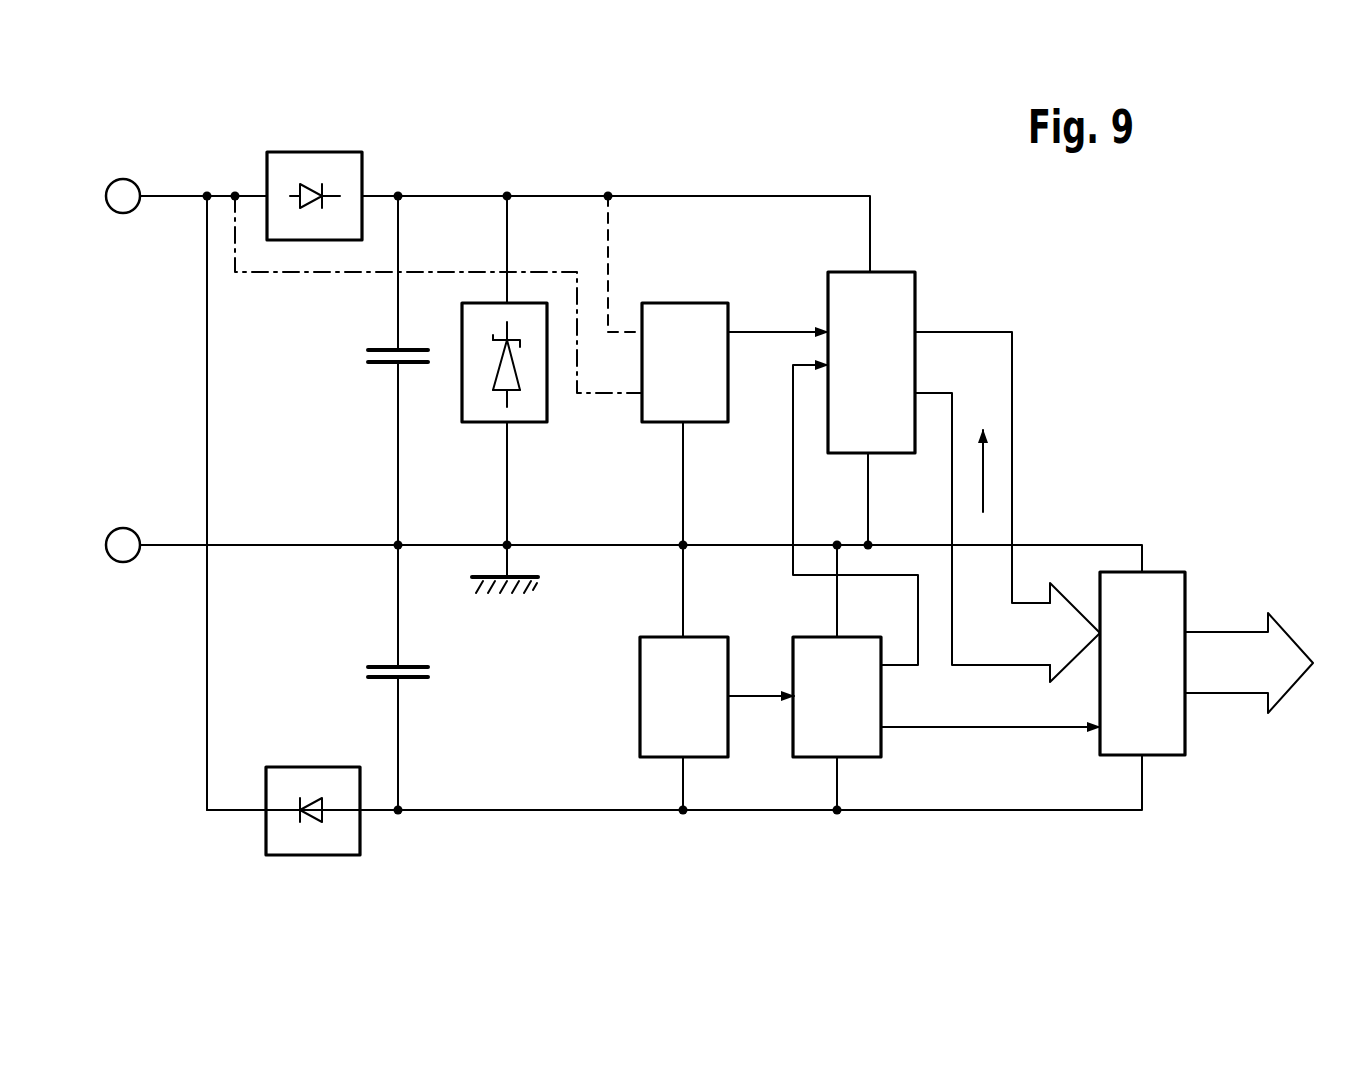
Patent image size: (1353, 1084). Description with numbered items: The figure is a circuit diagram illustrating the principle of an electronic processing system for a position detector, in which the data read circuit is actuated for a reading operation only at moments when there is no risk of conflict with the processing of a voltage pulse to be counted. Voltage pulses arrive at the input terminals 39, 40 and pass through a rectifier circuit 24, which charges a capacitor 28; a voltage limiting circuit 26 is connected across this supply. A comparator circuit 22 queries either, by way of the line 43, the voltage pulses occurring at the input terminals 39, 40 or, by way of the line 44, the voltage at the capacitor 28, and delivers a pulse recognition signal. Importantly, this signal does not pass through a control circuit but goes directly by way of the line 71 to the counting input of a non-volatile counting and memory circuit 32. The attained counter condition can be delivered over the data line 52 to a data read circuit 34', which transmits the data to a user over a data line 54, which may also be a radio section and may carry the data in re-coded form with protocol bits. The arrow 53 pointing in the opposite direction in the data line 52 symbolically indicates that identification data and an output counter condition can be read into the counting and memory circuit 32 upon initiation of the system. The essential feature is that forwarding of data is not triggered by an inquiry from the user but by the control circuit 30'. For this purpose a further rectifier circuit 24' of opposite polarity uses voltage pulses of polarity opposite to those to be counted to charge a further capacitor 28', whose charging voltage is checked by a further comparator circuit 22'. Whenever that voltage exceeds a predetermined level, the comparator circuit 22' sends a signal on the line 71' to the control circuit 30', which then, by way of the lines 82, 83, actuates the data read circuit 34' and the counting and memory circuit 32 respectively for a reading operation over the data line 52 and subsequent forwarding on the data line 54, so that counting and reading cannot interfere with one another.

The input terminal 39 is at (114, 182).
The input terminal 40 is at (114, 532).
The rectifier circuit 24 is at (346, 162).
The further rectifier circuit 24' is at (358, 837).
The line 43 is at (275, 272).
The line 44 is at (610, 245).
The capacitor 28 is at (367, 388).
The further capacitor 28' is at (444, 692).
The voltage limiting circuit 26 is at (535, 422).
The comparator circuit 22 is at (710, 390).
The further comparator circuit 22' is at (644, 689).
The line 71 is at (778, 287).
The line 71' is at (761, 644).
The counting and memory circuit 32 is at (915, 275).
The line 83 is at (793, 505).
The data line 52 is at (1012, 388).
The arrow 53 is at (985, 462).
The control circuit 30' is at (880, 717).
The line 82 is at (1018, 727).
The data read circuit 34' is at (1177, 633).
The data line 54 is at (1280, 700).